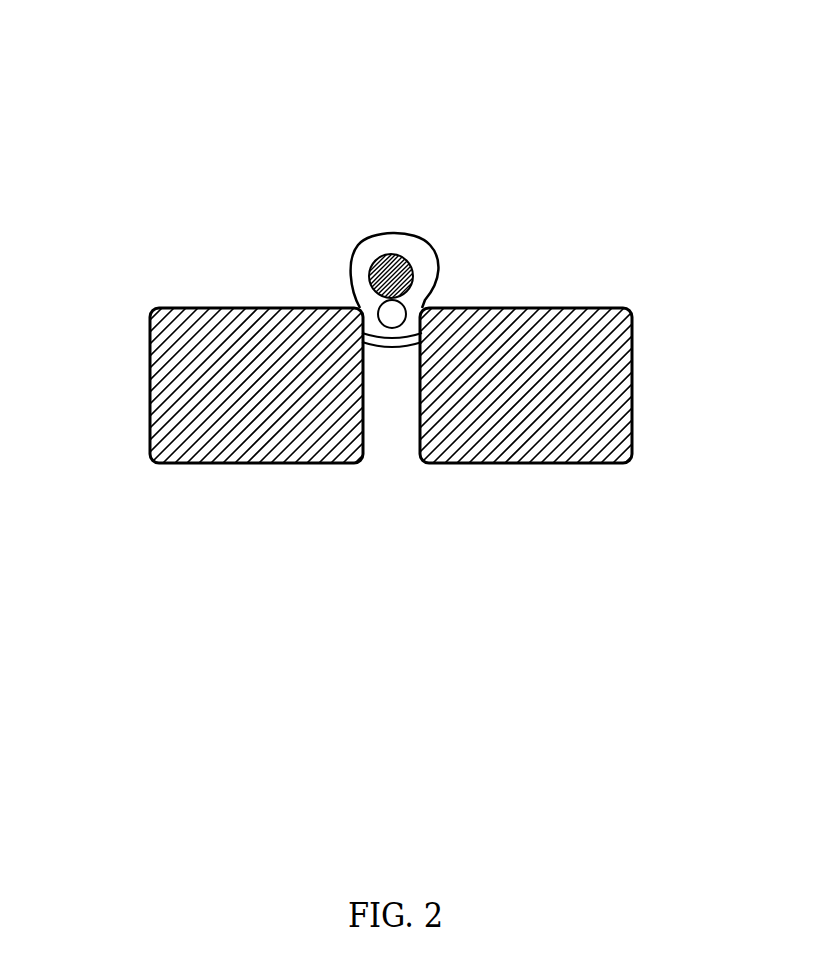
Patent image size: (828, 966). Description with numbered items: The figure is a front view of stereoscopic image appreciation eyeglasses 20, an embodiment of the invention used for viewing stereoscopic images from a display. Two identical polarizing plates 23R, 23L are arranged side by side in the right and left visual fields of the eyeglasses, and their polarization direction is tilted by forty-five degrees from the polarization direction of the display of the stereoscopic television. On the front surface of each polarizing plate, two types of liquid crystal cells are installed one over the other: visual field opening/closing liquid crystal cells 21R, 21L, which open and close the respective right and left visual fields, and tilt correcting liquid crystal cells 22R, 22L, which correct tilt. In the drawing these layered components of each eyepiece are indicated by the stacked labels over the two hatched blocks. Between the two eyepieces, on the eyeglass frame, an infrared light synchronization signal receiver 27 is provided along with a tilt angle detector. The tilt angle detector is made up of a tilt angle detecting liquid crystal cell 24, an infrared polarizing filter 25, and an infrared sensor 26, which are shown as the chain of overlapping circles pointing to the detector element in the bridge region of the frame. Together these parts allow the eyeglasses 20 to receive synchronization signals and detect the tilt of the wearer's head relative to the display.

The stereoscopic image appreciation eyeglasses 20 is at (125, 358).
The visual field opening/closing liquid crystal cell 21R is at (186, 306).
The tilt correcting liquid crystal cell 22R is at (246, 320).
The polarizing plate 23R is at (246, 304).
The visual field opening/closing liquid crystal cell 21L is at (593, 305).
The tilt correcting liquid crystal cell 22L is at (539, 320).
The polarizing plate 23L is at (543, 304).
The tilt angle detecting liquid crystal cell 24 is at (402, 249).
The infrared polarizing filter 25 is at (433, 149).
The infrared sensor 26 is at (435, 114).
The infrared light synchronization signal receiver 27 is at (370, 307).